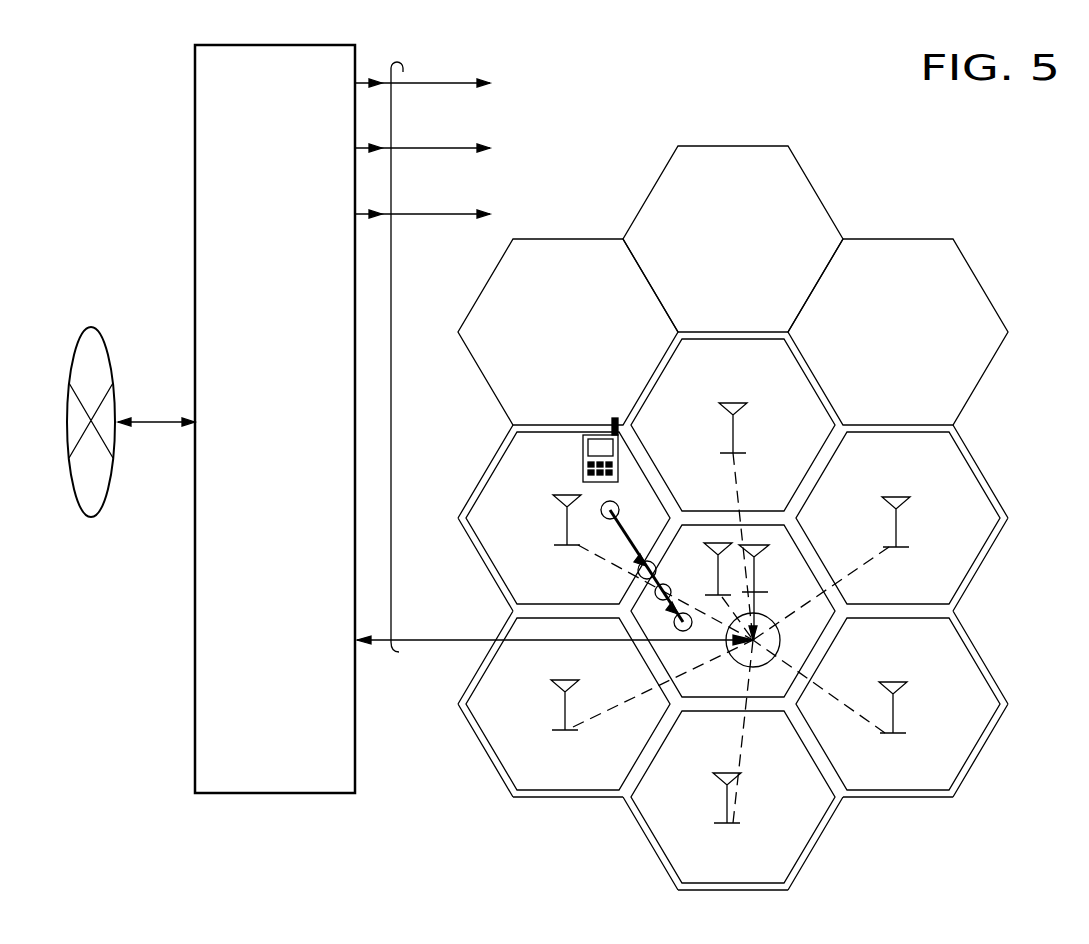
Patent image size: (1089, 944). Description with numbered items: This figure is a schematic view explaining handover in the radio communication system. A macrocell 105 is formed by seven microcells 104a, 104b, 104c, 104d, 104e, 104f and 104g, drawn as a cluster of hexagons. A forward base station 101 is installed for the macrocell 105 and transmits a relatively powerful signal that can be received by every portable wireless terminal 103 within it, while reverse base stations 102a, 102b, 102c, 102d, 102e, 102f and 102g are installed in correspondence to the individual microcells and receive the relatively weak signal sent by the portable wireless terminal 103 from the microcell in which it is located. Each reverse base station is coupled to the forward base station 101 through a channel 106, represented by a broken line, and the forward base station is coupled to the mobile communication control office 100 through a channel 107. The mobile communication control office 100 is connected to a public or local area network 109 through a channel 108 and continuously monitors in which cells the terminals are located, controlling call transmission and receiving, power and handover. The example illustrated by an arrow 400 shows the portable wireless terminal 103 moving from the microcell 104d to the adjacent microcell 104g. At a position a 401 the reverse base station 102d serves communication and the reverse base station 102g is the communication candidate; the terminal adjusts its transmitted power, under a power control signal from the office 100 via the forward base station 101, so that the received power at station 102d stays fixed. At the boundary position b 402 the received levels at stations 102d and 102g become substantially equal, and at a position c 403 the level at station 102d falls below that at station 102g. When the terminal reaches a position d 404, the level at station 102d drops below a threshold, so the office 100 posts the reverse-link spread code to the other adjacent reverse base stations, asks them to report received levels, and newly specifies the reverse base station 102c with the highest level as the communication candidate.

The mobile communication control office 100 is at (265, 795).
The forward base station 101 is at (759, 591).
The reverse base station 102a is at (899, 712).
The reverse base station 102b is at (722, 805).
The reverse base station 102c is at (552, 712).
The reverse base station 102d is at (560, 521).
The reverse base station 102e is at (740, 418).
The reverse base station 102f is at (900, 520).
The reverse base station 102g is at (724, 542).
The portable wireless terminal 103 is at (600, 432).
The microcell 104a is at (908, 788).
The microcell 104b is at (796, 879).
The microcell 104c is at (549, 789).
The microcell 104d is at (512, 455).
The microcell 104e is at (727, 344).
The microcell 104f is at (948, 460).
The microcell 104g is at (799, 543).
The macrocell 105 is at (978, 754).
The channel 106 is at (780, 641).
The channel 107 is at (399, 652).
The channel 108 is at (157, 420).
The public or local area network 109 is at (91, 327).
The arrow 400 is at (610, 536).
The position a 401 is at (618, 503).
The position b 402 is at (638, 575).
The position c 403 is at (690, 574).
The position d 404 is at (674, 626).